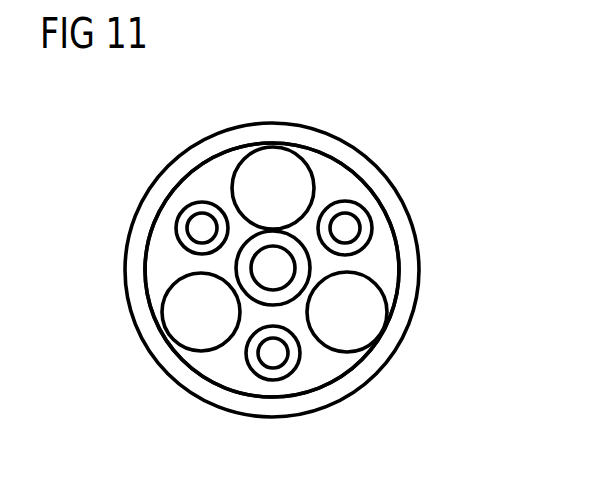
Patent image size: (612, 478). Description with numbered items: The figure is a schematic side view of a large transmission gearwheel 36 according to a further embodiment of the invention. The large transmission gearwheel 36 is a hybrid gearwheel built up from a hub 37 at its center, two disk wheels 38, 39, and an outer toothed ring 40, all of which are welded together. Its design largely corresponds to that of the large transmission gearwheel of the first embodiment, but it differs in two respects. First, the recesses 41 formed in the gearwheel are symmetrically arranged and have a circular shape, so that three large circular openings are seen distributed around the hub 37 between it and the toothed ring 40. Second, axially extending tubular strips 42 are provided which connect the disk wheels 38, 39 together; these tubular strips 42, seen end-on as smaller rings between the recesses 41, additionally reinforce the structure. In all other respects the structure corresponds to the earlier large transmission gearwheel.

The large transmission gearwheel 36 is at (424, 125).
The hub 37 is at (303, 268).
The disk wheel 38 is at (333, 362).
The disk wheel 39 is at (272, 270).
The toothed ring 40 is at (170, 178).
The recesses 41 is at (265, 168).
The tubular strips 42 is at (183, 222).